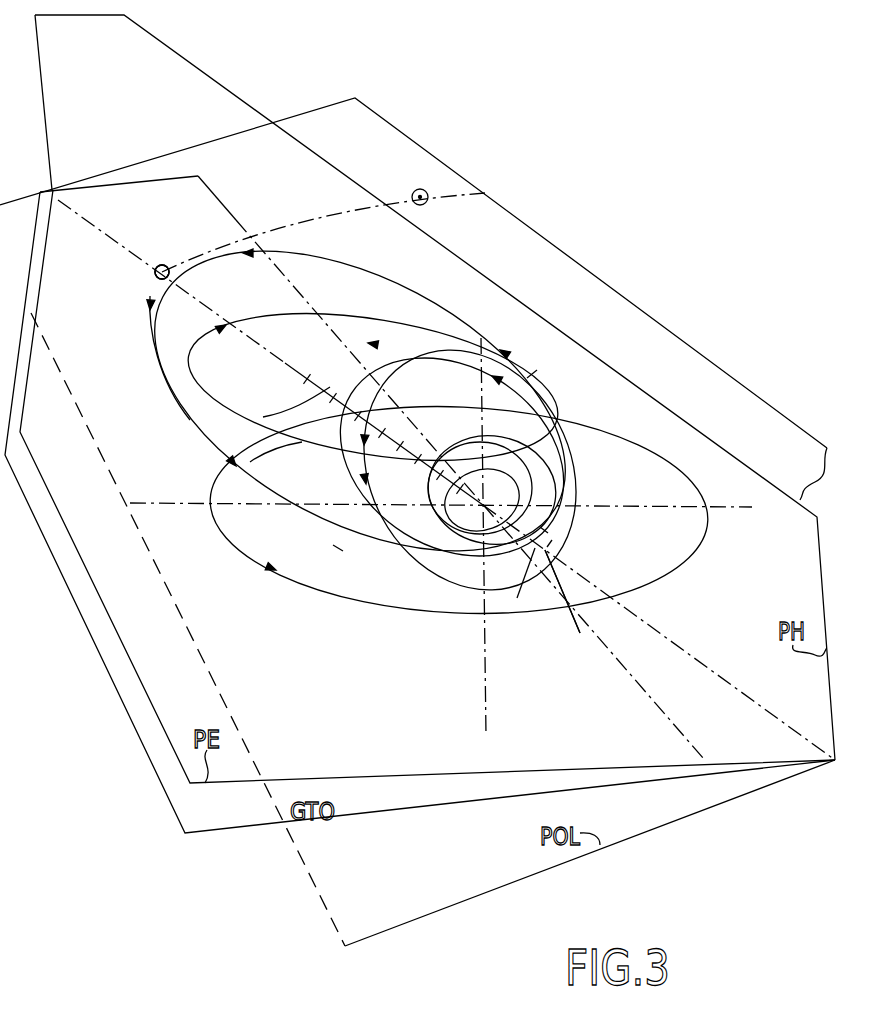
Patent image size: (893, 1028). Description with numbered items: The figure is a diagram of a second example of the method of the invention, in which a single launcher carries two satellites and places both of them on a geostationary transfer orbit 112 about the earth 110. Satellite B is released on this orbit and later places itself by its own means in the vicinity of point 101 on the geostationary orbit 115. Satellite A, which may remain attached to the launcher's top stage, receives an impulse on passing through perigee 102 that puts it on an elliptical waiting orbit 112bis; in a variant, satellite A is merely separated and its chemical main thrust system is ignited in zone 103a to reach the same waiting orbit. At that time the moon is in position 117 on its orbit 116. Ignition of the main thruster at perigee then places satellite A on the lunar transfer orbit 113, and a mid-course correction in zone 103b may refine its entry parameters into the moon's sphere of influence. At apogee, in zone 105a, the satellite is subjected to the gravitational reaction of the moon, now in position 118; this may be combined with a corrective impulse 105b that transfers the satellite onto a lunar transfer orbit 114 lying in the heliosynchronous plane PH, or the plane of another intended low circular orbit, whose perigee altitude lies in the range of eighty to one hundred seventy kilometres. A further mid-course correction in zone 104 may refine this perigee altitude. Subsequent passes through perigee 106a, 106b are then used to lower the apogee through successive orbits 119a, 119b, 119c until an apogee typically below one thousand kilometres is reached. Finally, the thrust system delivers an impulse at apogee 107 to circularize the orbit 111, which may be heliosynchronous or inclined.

The point on geostationary orbit 101 is at (437, 392).
The perigee 102 is at (547, 547).
The zone 103a is at (540, 527).
The mid-course correction zone 103b is at (533, 373).
The mid-course correction zone 104 is at (337, 543).
The zone of lunar gravitational reaction 105a is at (155, 270).
The corrective impulse 105b is at (155, 275).
The perigee pass 106a is at (590, 605).
The perigee pass 106b is at (580, 633).
The apogee 107 is at (440, 470).
The earth 110 is at (527, 490).
The circularized orbit 111 is at (522, 590).
The geostationary transfer orbit 112 is at (562, 448).
The elliptical waiting orbit 112bis is at (362, 318).
The lunar transfer orbit 113 is at (383, 287).
The lunar transfer orbit in plane PH 114 is at (163, 345).
The geostationary orbit 115 is at (633, 445).
The lunar orbit 116 is at (280, 222).
The moon position 117 is at (415, 189).
The moon position 118 is at (170, 275).
The decreasing-apogee orbit 119a is at (283, 387).
The decreasing-apogee orbit 119b is at (273, 409).
The decreasing-apogee orbit 119c is at (302, 442).